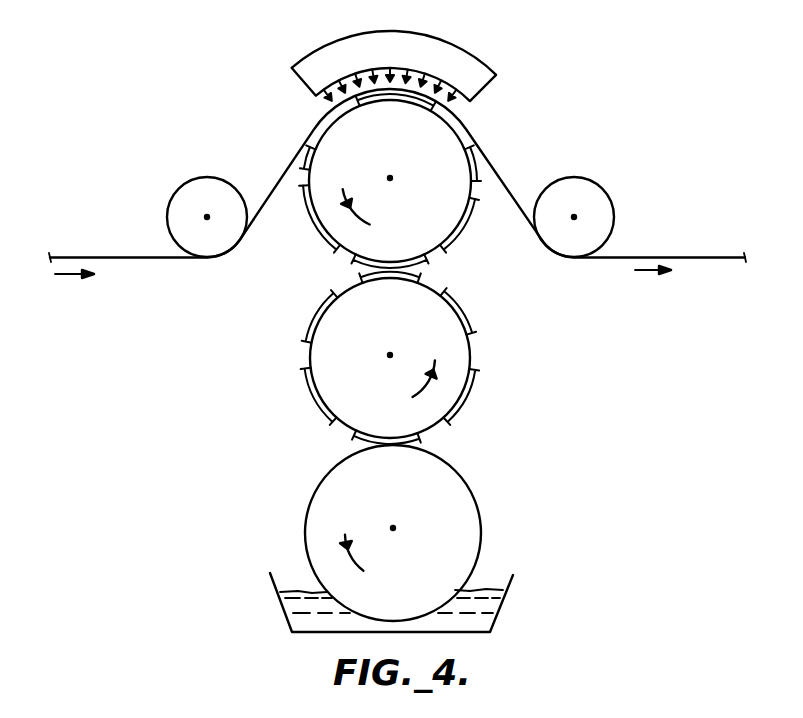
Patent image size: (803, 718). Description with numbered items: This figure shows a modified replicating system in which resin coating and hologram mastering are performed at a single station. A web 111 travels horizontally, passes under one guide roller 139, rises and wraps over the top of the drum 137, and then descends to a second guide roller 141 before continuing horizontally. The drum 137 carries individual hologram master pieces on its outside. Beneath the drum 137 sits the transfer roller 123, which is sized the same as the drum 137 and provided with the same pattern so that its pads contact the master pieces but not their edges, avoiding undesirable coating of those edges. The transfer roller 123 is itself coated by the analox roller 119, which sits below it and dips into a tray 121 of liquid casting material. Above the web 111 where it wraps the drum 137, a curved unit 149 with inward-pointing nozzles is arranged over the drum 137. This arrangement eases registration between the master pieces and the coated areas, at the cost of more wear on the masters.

The web 111 is at (102, 258).
The analox roller 119 is at (448, 487).
The tray 121 is at (302, 560).
The transfer roller 123 is at (457, 350).
The drum 137 is at (427, 238).
The guide roller 139 is at (203, 187).
The guide roller 141 is at (590, 192).
The dryer 149 is at (442, 52).